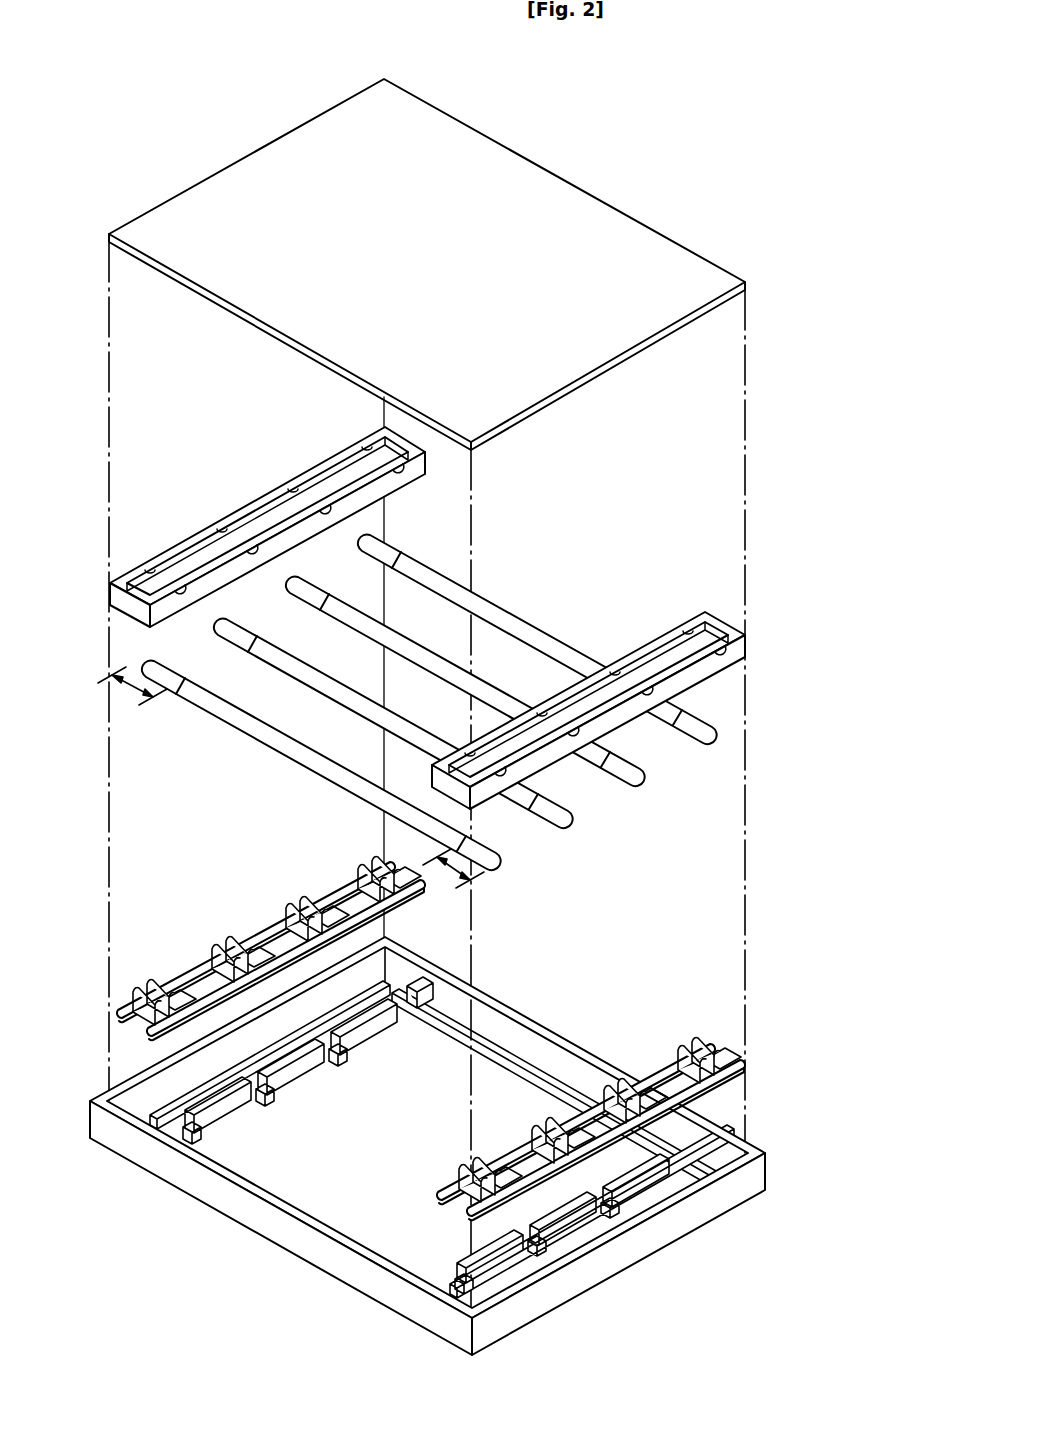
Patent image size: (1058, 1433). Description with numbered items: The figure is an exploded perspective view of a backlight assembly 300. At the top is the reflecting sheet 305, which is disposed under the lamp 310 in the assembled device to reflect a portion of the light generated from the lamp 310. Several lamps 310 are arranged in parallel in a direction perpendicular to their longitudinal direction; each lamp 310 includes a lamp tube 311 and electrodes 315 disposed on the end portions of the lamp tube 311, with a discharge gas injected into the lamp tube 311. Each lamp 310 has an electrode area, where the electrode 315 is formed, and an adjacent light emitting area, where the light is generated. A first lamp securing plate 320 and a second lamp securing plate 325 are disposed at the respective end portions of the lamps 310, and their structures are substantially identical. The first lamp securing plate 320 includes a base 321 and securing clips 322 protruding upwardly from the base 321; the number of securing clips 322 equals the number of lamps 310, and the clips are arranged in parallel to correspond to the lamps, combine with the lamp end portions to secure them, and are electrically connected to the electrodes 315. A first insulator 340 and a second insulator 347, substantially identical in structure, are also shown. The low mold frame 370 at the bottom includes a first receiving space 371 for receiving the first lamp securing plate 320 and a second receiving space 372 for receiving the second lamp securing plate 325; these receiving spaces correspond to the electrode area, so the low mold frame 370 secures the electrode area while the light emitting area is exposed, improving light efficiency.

The backlight assembly 300 is at (474, 72).
The reflecting sheet 305 is at (722, 287).
The lamp 310 is at (826, 680).
The lamp tube 311 is at (677, 690).
The electrode 315 is at (695, 719).
The first lamp securing plate 320 is at (271, 940).
The base 321 is at (248, 938).
The securing clip 322 is at (288, 914).
The second lamp securing plate 325 is at (738, 1082).
The first insulator 340 is at (183, 548).
The second insulator 347 is at (717, 618).
The low mold frame 370 is at (474, 1130).
The first receiving space 371 is at (385, 987).
The second receiving space 372 is at (587, 1238).